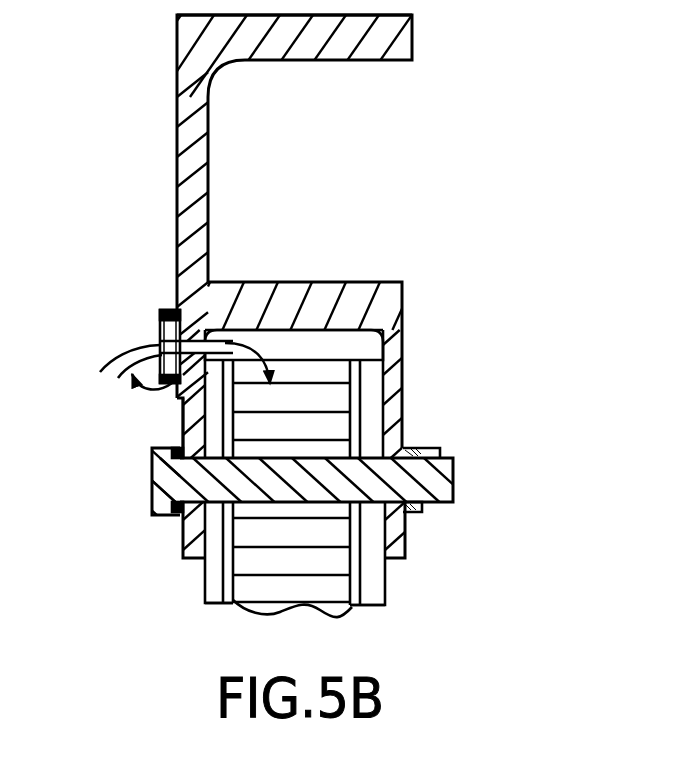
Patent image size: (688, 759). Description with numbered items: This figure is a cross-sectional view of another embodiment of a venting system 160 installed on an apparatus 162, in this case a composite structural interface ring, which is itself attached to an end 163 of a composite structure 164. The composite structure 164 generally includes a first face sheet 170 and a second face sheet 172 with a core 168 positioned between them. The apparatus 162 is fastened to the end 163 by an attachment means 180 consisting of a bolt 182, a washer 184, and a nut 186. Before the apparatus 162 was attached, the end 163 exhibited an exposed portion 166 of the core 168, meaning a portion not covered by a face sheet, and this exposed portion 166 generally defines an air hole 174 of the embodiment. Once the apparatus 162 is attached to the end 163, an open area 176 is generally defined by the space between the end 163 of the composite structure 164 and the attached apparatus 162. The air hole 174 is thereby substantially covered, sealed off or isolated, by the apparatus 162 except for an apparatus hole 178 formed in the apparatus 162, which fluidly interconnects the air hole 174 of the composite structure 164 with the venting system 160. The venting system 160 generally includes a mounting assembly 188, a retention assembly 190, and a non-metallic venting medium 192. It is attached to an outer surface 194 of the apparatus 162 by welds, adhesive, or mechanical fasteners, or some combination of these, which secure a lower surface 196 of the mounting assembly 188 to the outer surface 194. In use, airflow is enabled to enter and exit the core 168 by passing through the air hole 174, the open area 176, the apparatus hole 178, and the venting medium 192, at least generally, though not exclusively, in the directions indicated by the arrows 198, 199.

The venting system 160 is at (135, 322).
The apparatus 162 is at (178, 152).
The end 163 is at (300, 345).
The composite structure 164 is at (388, 578).
The exposed portion 166 is at (258, 345).
The core 168 is at (333, 422).
The first face sheet 170 is at (218, 587).
The second face sheet 172 is at (378, 597).
The air hole 174 is at (330, 345).
The open area 176 is at (404, 338).
The apparatus hole 178 is at (210, 340).
The attachment means 180 is at (143, 474).
The bolt 182 is at (150, 509).
The washer 184 is at (178, 452).
The nut 186 is at (425, 452).
The mounting assembly 188 is at (170, 310).
The retention assembly 190 is at (160, 310).
The non-metallic venting medium 192 is at (160, 340).
The outer surface 194 is at (178, 185).
The lower surface 196 is at (180, 403).
The arrow 198 is at (122, 390).
The arrow 199 is at (222, 343).